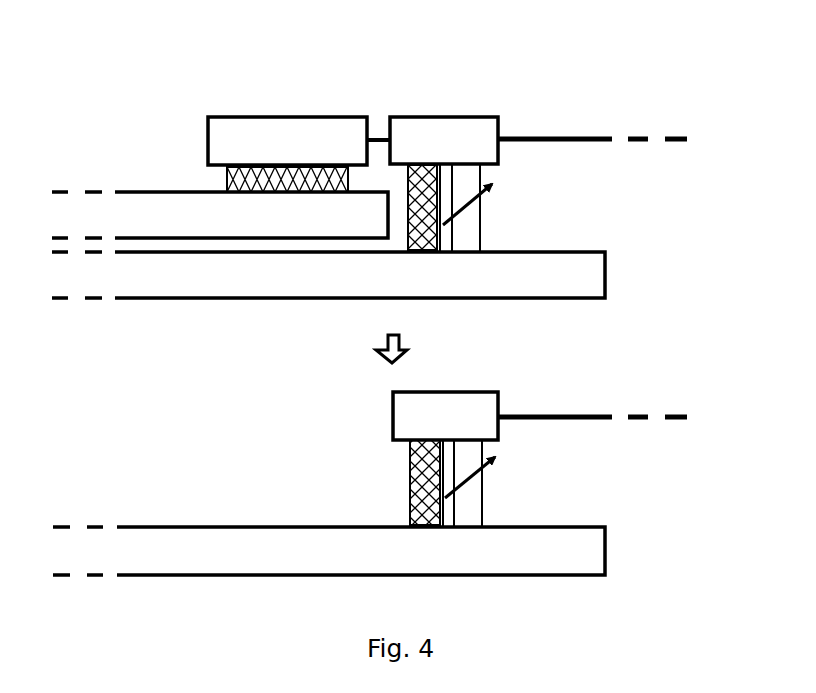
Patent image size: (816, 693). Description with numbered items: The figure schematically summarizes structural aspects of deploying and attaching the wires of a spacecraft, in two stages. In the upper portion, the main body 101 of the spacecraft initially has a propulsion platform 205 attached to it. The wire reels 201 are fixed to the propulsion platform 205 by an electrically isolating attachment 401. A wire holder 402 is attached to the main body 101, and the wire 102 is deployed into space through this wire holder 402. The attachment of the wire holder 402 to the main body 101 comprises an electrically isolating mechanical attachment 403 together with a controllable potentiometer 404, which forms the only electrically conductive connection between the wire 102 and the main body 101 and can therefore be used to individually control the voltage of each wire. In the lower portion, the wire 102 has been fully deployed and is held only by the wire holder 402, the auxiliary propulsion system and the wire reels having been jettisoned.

The main body 101 is at (196, 288).
The wire 102 is at (568, 136).
The wire reel 201 is at (258, 125).
The propulsion platform 205 is at (196, 226).
The electrically isolating attachment 401 is at (225, 176).
The wire holder 402 is at (437, 124).
The electrically isolating mechanical attachment 403 is at (432, 241).
The controllable potentiometer 404 is at (470, 217).